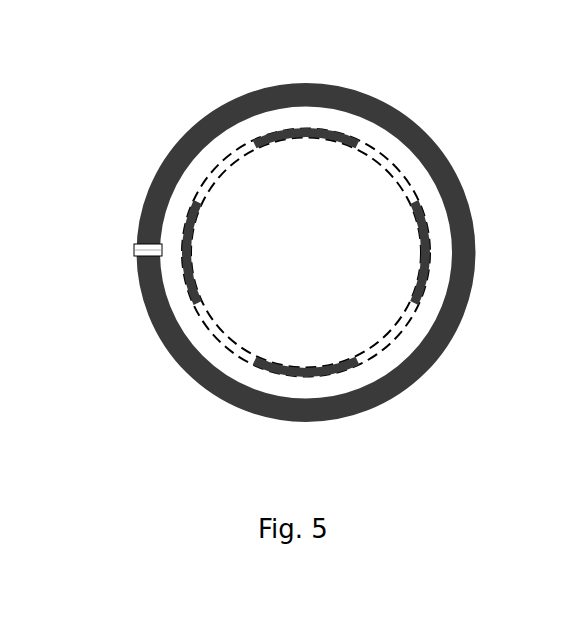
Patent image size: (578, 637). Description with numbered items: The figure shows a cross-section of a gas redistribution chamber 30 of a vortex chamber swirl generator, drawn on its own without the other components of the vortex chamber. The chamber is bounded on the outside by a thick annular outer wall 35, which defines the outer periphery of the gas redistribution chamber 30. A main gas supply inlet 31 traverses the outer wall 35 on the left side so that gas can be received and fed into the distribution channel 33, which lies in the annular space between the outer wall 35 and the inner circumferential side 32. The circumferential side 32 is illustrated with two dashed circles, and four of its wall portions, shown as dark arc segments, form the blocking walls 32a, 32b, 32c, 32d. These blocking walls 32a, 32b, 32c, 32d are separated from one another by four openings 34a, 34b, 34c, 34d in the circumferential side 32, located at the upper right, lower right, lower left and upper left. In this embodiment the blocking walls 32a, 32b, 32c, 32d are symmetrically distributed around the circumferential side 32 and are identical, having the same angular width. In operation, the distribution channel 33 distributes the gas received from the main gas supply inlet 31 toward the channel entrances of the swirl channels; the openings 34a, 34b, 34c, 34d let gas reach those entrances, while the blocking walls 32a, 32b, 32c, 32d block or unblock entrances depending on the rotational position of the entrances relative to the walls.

The gas redistribution chamber 30 is at (144, 88).
The main gas supply inlet 31 is at (141, 254).
The circumferential side 32 is at (238, 165).
The blocking wall 32a is at (303, 138).
The blocking wall 32b is at (418, 235).
The blocking wall 32c is at (277, 366).
The blocking wall 32d is at (188, 243).
The distribution channel 33 is at (422, 183).
The opening 34a is at (385, 170).
The opening 34b is at (392, 338).
The opening 34c is at (227, 344).
The opening 34d is at (208, 187).
The outer wall 35 is at (417, 127).